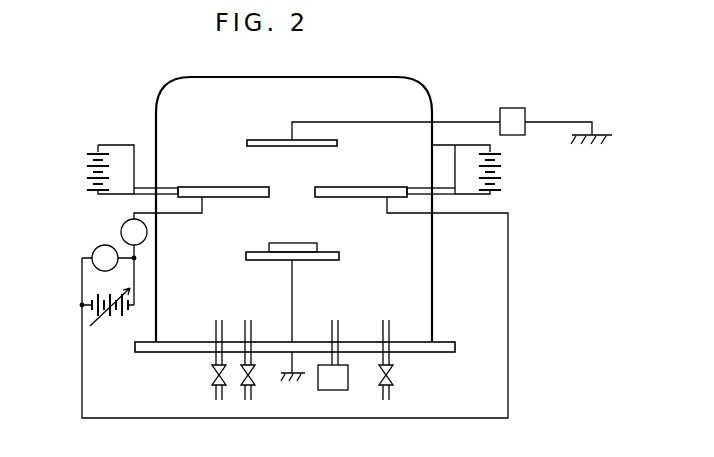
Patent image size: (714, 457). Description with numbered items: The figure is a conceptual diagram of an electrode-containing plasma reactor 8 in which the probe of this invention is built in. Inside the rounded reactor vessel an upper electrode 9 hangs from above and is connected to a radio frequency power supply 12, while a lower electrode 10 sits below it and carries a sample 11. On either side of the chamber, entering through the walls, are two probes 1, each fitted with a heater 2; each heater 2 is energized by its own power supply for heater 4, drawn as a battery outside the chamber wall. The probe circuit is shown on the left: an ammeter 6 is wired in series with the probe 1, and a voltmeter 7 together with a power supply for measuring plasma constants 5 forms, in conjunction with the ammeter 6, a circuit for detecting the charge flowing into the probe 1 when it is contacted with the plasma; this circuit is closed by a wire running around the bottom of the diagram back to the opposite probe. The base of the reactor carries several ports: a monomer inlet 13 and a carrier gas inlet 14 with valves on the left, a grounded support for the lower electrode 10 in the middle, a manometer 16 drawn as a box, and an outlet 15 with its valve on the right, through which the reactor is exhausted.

The probe 1 is at (224, 187).
The heater 2 is at (149, 188).
The power supply for heater 4 is at (86, 172).
The power supply for measuring plasma constants 5 is at (119, 312).
The ammeter 6 is at (121, 223).
The voltmeter 7 is at (111, 251).
The plasma reactor 8 is at (384, 77).
The upper electrode 9 is at (269, 140).
The lower electrode 10 is at (339, 256).
The sample 11 is at (292, 243).
The radio frequency power supply 12 is at (512, 108).
The monomer inlet 13 is at (211, 375).
The carrier gas inlet 14 is at (254, 377).
The outlet 15 is at (394, 377).
The manometer 16 is at (349, 378).